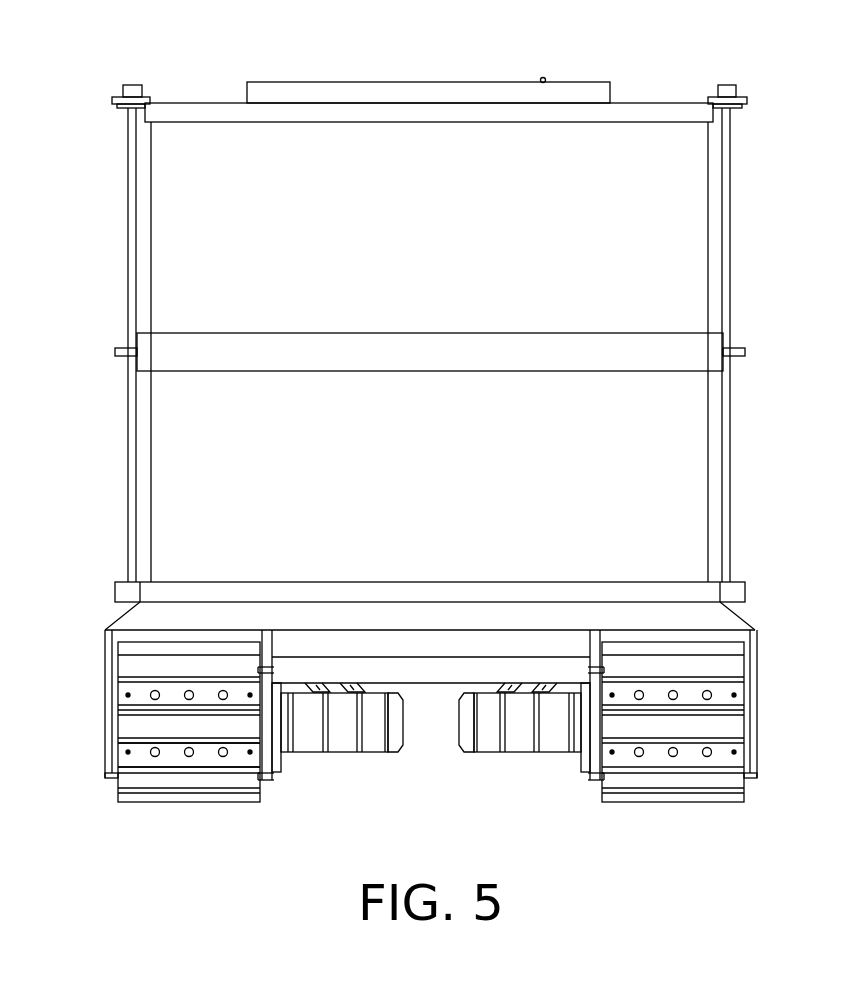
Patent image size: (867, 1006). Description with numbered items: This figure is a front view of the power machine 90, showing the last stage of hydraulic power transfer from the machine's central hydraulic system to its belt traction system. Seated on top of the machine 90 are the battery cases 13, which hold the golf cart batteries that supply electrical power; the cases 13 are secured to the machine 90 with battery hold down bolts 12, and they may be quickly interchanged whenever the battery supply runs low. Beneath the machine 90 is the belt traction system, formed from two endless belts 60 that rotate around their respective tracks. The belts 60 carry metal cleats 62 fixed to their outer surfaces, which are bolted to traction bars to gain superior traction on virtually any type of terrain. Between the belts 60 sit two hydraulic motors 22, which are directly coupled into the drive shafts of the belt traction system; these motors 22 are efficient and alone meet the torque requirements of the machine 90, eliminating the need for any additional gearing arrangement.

The battery hold down bolt 12 is at (134, 84).
The battery case 13 is at (455, 242).
The hydraulic motor 22 is at (485, 745).
The endless belt 60 is at (137, 722).
The metal cleat 62 is at (138, 753).
The machine 90 is at (410, 58).